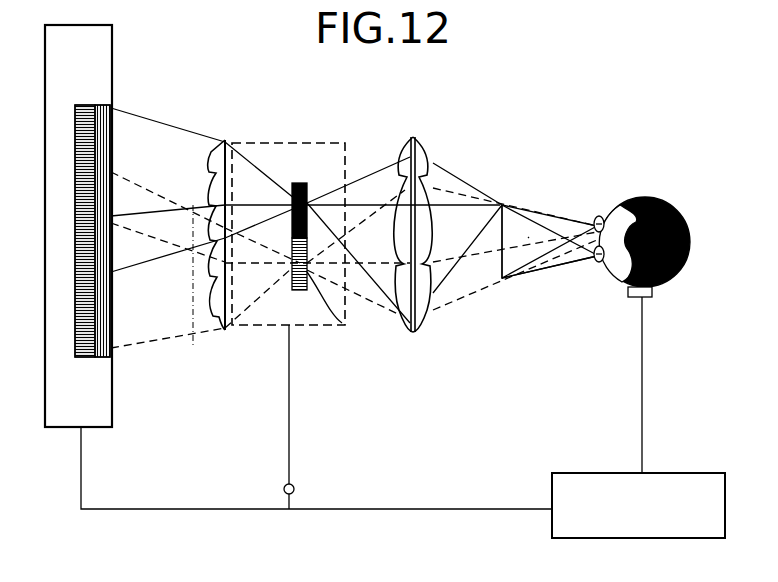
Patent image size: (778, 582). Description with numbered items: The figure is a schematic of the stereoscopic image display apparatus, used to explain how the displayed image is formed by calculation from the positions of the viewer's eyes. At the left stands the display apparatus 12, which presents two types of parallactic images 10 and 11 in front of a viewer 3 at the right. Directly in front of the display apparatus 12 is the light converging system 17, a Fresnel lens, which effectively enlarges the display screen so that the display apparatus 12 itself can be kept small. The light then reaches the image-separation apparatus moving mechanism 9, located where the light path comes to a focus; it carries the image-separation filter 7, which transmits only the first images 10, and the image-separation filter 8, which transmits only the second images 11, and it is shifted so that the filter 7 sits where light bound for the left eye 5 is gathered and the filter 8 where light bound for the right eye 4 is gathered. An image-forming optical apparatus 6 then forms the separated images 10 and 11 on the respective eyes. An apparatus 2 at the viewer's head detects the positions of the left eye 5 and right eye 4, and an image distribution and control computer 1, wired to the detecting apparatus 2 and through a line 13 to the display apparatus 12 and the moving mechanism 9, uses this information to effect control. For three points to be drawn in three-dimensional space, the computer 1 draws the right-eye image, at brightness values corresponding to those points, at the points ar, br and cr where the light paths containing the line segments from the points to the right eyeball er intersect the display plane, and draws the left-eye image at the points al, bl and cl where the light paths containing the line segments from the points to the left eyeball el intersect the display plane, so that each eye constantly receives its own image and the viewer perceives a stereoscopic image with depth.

The computer 1 is at (695, 473).
The eye position detecting apparatus 2 is at (655, 297).
The viewer 3 is at (645, 200).
The right eye 4 is at (598, 218).
The left eye 5 is at (598, 280).
The image-forming optical apparatus 6 is at (415, 138).
The image-separation apparatus 7 is at (300, 183).
The image-separation apparatus 8 is at (345, 324).
The image-separation apparatus moving mechanism 9 is at (348, 326).
The first images 10 is at (100, 107).
The second images 11 is at (80, 358).
The display apparatus 12 is at (115, 427).
The control line 13 is at (290, 440).
The light converging system 17 is at (225, 330).
The left-eye drawing point b bl is at (168, 114).
The right-eye drawing point b br is at (168, 187).
The left-eye drawing point a al is at (168, 212).
The right-eye drawing point a ar is at (168, 242).
The left-eye drawing point c cl is at (168, 265).
The right-eye drawing point c cr is at (168, 353).
The right eyeball er is at (607, 204).
The left eyeball el is at (606, 282).